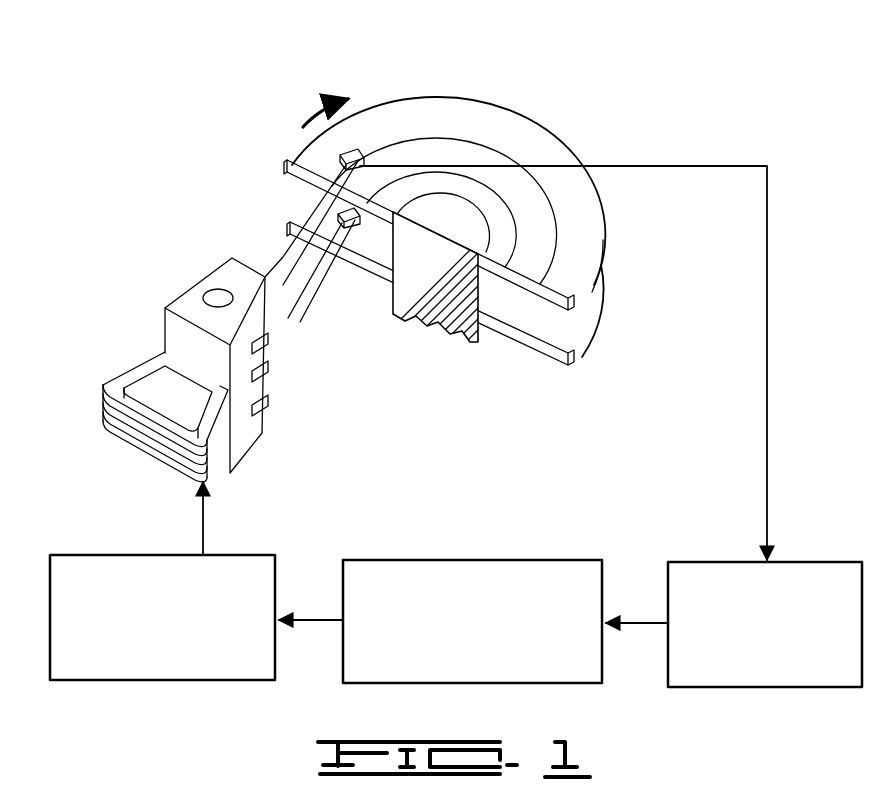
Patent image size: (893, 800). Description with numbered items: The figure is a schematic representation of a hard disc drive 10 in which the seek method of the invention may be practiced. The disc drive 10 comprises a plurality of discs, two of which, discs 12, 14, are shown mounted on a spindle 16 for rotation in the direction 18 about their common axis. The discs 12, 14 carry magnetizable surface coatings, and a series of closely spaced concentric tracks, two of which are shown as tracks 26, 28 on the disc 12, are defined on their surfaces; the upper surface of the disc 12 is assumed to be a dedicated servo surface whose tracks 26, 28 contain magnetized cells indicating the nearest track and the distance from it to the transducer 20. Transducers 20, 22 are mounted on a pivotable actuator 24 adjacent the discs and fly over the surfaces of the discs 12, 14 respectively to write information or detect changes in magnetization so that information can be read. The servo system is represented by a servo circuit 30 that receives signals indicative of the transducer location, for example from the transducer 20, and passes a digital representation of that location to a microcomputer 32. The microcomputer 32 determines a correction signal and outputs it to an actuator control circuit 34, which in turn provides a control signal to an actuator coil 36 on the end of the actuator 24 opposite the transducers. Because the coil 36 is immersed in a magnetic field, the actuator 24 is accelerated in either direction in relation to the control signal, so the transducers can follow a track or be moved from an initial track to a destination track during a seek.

The disc drive 10 is at (500, 88).
The disc 12 is at (473, 165).
The disc 14 is at (575, 318).
The spindle 16 is at (447, 330).
The direction of rotation 18 is at (320, 113).
The transducer 20 is at (340, 156).
The transducer 22 is at (330, 212).
The pivotable actuator 24 is at (190, 277).
The track 26 is at (553, 218).
The track 28 is at (498, 193).
The servo circuit 30 is at (807, 562).
The microcomputer 32 is at (475, 557).
The actuator control circuit 34 is at (230, 553).
The actuator coil 36 is at (167, 463).